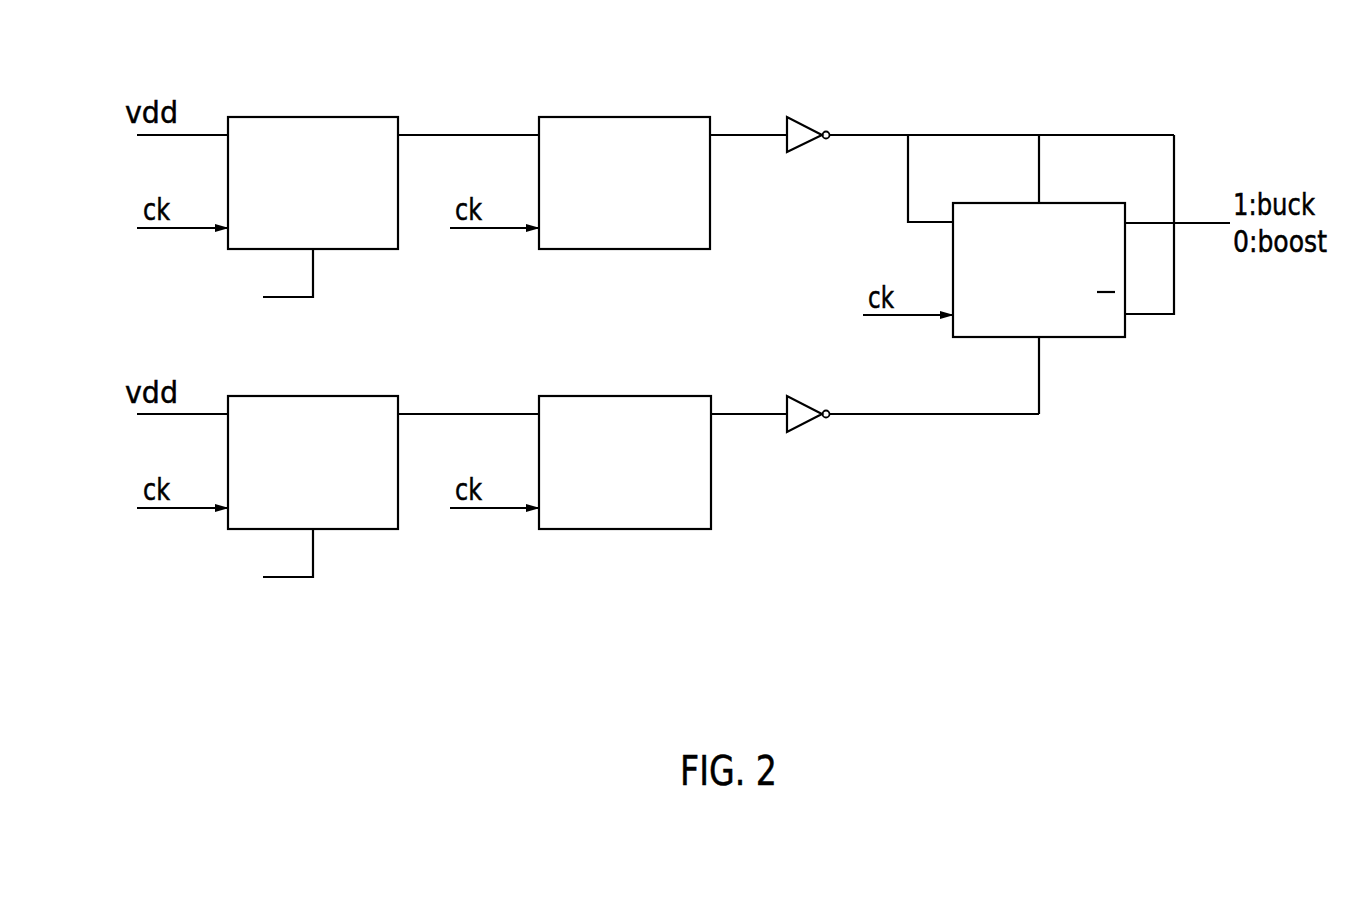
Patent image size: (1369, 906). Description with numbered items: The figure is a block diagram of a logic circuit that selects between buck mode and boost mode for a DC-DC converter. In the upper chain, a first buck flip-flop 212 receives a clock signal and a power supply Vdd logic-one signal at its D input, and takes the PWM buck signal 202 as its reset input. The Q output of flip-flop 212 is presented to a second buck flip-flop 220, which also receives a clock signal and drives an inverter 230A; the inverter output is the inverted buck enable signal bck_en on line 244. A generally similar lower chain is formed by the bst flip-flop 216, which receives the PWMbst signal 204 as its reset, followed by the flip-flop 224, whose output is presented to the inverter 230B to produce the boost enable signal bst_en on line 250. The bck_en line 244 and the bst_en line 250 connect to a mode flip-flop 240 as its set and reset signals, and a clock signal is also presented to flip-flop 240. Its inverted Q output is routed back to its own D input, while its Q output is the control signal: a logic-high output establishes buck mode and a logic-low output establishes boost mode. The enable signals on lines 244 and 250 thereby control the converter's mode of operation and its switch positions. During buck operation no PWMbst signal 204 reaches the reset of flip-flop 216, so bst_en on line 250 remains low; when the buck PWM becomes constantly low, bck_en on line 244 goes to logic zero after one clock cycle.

The buck 1 flip-flop 212 is at (313, 117).
The buck 2 flip-flop 220 is at (626, 117).
The inverter 230A is at (806, 127).
The bck_en signal line 244 is at (1016, 135).
The PWM buck signal 202 is at (288, 297).
The bst flip-flop 216 is at (360, 529).
The boost 2 flip-flop 224 is at (623, 529).
The inverter 230B is at (803, 424).
The bst_en signal line 250 is at (907, 414).
The mode flip-flop 240 is at (1127, 323).
The PWMbst signal 204 is at (288, 577).